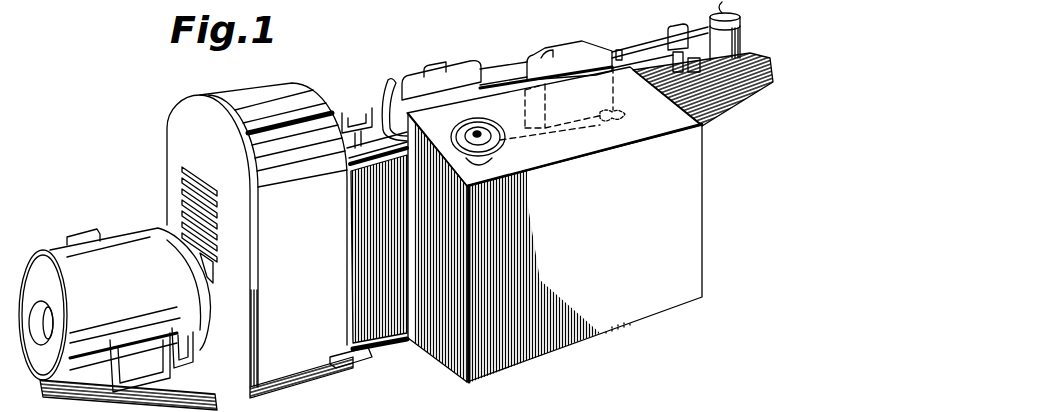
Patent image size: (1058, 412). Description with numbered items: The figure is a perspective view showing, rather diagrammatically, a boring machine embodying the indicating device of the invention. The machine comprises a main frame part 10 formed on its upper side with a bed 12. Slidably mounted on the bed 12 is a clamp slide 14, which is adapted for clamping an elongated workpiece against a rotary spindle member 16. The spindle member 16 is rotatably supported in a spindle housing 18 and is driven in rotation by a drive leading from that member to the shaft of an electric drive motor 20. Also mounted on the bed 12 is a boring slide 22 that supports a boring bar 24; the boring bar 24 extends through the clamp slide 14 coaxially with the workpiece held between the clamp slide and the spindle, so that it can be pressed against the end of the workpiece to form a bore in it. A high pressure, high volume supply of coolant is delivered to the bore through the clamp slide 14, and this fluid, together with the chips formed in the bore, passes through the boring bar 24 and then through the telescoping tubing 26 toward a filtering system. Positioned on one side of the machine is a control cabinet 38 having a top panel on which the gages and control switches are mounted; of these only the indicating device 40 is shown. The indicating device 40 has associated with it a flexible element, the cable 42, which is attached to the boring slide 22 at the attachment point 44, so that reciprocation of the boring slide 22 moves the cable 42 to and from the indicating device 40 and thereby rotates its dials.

The main frame part 10 is at (373, 320).
The bed 12 is at (357, 113).
The clamp slide 14 is at (424, 82).
The rotary spindle member 16 is at (330, 103).
The spindle housing 18 is at (282, 86).
The electric drive motor 20 is at (123, 235).
The boring slide 22 is at (571, 47).
The boring bar 24 is at (500, 70).
The telescoping tubing 26 is at (628, 50).
The control cabinet 38 is at (654, 305).
The indicating device 40 is at (522, 127).
The cable 42 is at (573, 135).
The attachment point 44 is at (628, 116).